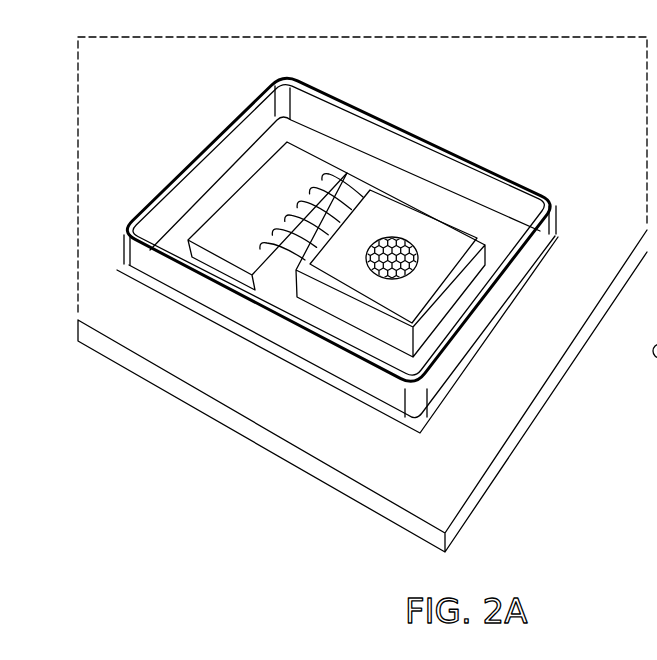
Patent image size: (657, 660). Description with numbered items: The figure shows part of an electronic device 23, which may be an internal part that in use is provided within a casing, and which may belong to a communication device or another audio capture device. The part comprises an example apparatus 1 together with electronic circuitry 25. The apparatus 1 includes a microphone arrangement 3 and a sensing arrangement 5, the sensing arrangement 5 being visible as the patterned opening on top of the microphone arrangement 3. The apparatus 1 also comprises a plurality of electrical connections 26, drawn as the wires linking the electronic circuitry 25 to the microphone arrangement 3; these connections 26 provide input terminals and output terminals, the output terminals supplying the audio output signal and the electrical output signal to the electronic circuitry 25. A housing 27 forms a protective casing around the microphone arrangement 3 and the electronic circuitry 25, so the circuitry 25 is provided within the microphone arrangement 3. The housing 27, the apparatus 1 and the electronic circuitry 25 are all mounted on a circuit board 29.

The apparatus 1 is at (443, 273).
The microphone arrangement 3 is at (368, 223).
The sensing arrangement 5 is at (398, 240).
The electronic device 23 is at (333, 367).
The electronic circuitry 25 is at (237, 222).
The electrical connections 26 is at (296, 266).
The housing 27 is at (502, 197).
The circuit board 29 is at (563, 390).